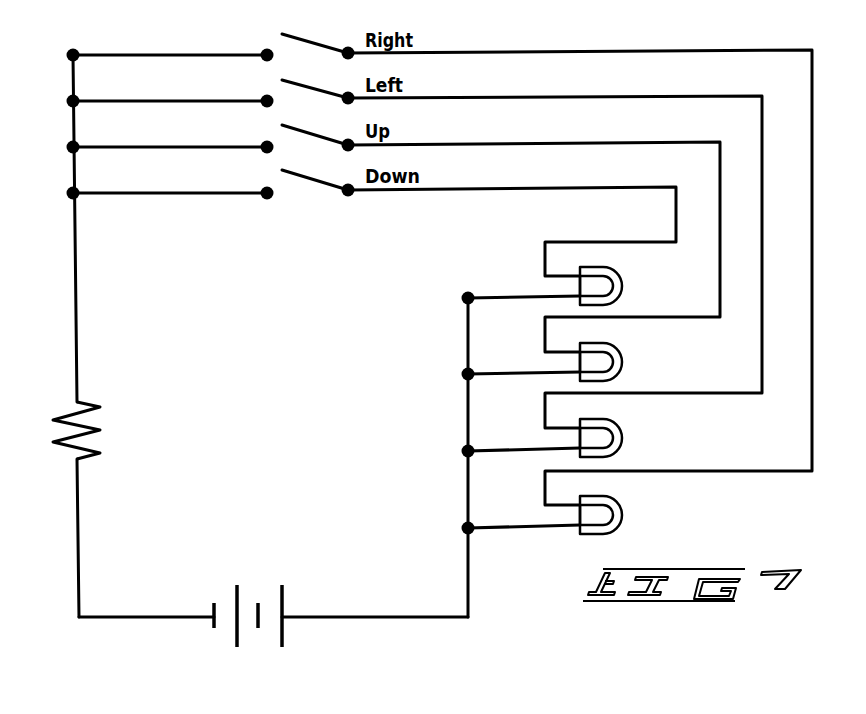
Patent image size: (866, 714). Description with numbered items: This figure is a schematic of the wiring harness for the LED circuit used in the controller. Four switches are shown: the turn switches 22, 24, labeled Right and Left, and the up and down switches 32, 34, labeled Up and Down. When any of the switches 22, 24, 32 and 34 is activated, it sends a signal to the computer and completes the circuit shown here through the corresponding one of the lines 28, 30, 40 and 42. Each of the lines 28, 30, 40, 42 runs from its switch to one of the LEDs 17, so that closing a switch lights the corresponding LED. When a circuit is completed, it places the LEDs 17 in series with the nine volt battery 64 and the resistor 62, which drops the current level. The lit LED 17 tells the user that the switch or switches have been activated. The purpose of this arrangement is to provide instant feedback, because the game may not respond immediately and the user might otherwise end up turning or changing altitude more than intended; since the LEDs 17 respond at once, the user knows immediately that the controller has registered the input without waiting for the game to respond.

The LEDs 17 is at (493, 276).
The turn switch 22 is at (296, 34).
The turn switch 24 is at (290, 80).
The up switch 32 is at (298, 127).
The down switch 34 is at (292, 170).
The line 28 is at (568, 50).
The line 30 is at (583, 97).
The line 40 is at (585, 142).
The line 42 is at (594, 187).
The resistor 62 is at (100, 405).
The nine volt battery 64 is at (236, 585).